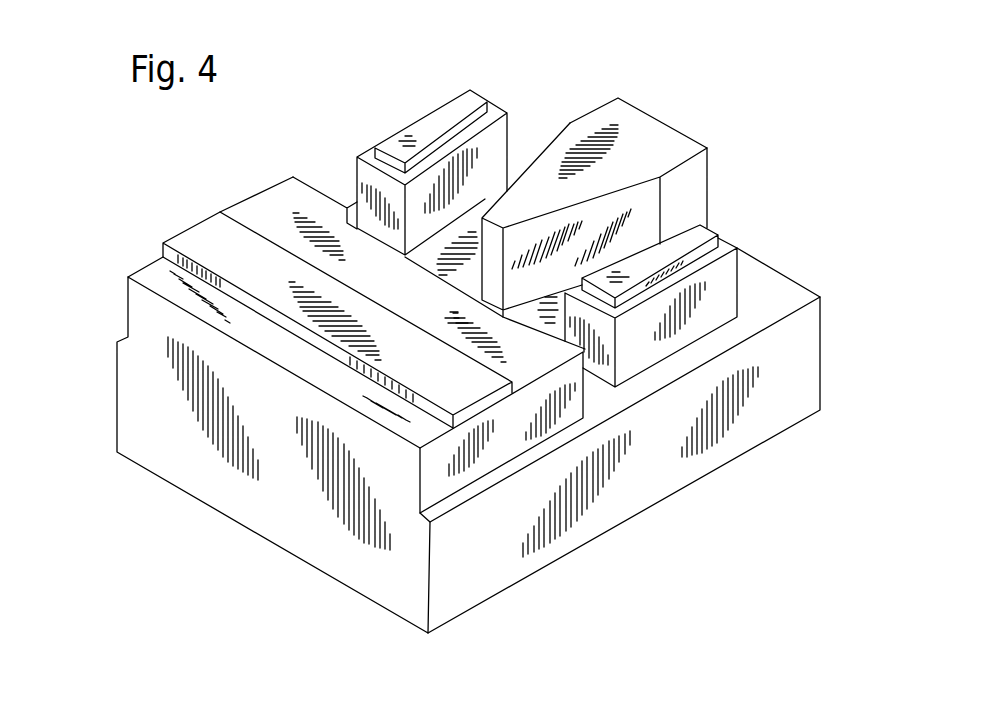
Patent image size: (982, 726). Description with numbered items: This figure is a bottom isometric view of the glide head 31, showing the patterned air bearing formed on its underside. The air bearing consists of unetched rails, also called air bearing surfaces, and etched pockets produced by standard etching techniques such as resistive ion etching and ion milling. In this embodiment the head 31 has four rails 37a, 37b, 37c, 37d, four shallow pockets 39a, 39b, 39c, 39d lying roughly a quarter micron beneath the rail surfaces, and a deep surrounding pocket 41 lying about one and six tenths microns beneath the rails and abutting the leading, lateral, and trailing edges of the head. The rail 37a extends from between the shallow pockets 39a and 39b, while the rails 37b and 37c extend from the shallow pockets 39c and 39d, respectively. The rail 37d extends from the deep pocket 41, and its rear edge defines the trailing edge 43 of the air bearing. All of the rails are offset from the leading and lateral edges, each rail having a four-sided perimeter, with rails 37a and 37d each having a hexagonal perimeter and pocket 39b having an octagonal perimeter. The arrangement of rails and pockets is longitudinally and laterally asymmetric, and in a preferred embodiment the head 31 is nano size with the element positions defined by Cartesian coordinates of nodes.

The glide head 31 is at (712, 99).
The rail or air bearing surface 37a is at (200, 237).
The rail or air bearing surface 37b is at (442, 118).
The rail or air bearing surface 37c is at (691, 240).
The rail or air bearing surface 37d is at (648, 140).
The shallow pocket 39a is at (153, 273).
The shallow pocket 39b is at (270, 208).
The shallow pocket 39c is at (491, 110).
The shallow pocket 39d is at (727, 243).
The deep surrounding pocket 41 is at (771, 297).
The trailing edge 43 is at (691, 137).